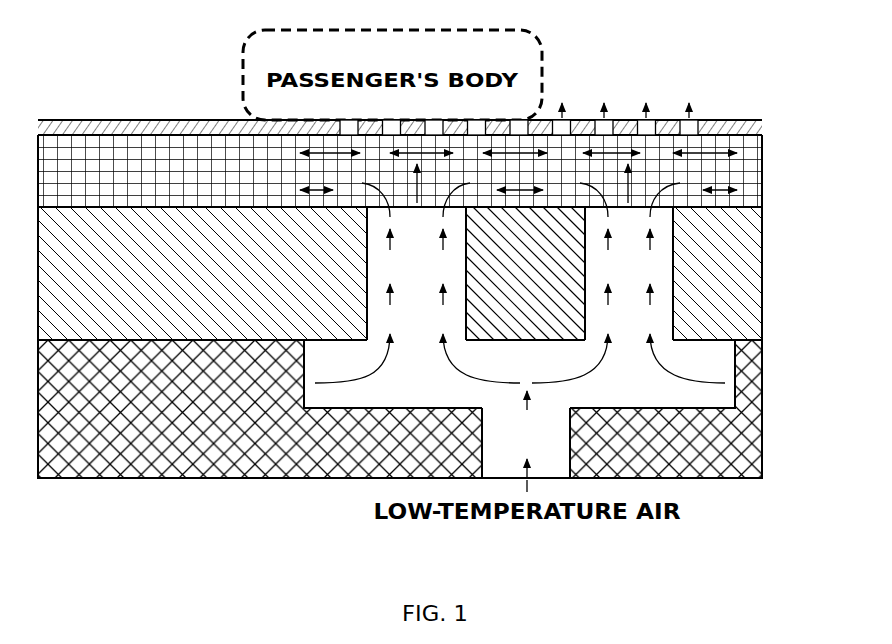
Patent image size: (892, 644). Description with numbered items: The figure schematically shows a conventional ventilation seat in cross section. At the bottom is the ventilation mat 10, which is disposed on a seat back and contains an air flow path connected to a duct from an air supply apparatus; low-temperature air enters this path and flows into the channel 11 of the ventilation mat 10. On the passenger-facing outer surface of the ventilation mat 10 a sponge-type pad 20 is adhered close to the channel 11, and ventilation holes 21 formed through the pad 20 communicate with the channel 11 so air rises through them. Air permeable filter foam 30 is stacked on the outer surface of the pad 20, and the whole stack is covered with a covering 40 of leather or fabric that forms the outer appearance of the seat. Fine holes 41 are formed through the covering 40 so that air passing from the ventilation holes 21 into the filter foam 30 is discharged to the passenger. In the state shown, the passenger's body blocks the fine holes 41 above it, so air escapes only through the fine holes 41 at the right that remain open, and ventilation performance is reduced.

The ventilation mat 10 is at (343, 440).
The channel 11 is at (688, 395).
The sponge-type pad 20 is at (142, 227).
The ventilation holes 21 is at (672, 255).
The air permeable filter foam 30 is at (203, 157).
The covering 40 is at (732, 127).
The fine holes 41 is at (689, 127).